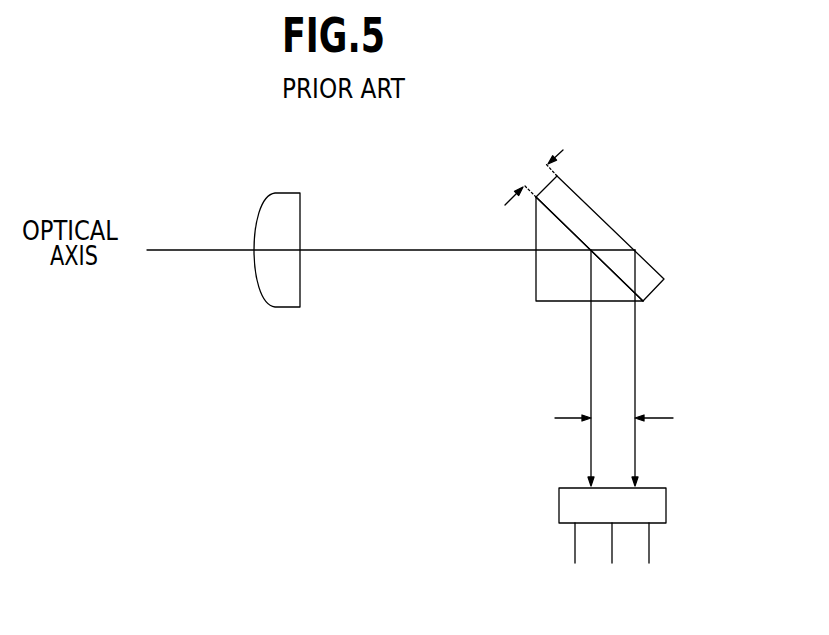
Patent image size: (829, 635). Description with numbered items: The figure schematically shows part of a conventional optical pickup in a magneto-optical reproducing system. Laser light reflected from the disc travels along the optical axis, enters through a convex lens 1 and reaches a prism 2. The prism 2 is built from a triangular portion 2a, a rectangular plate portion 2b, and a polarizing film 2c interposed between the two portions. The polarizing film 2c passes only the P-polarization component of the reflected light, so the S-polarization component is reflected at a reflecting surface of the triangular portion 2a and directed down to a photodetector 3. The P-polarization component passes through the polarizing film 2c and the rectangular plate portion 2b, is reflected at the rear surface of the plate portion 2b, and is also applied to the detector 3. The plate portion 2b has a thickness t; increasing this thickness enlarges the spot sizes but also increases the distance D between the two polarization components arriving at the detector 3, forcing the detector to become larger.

The convex lens 1 is at (283, 203).
The prism 2 is at (570, 204).
The triangular portion 2a is at (543, 230).
The rectangular plate portion 2b is at (617, 238).
The polarizing film 2c is at (560, 215).
The photodetector 3 is at (665, 502).
The thickness t is at (534, 177).
The distance D is at (607, 417).